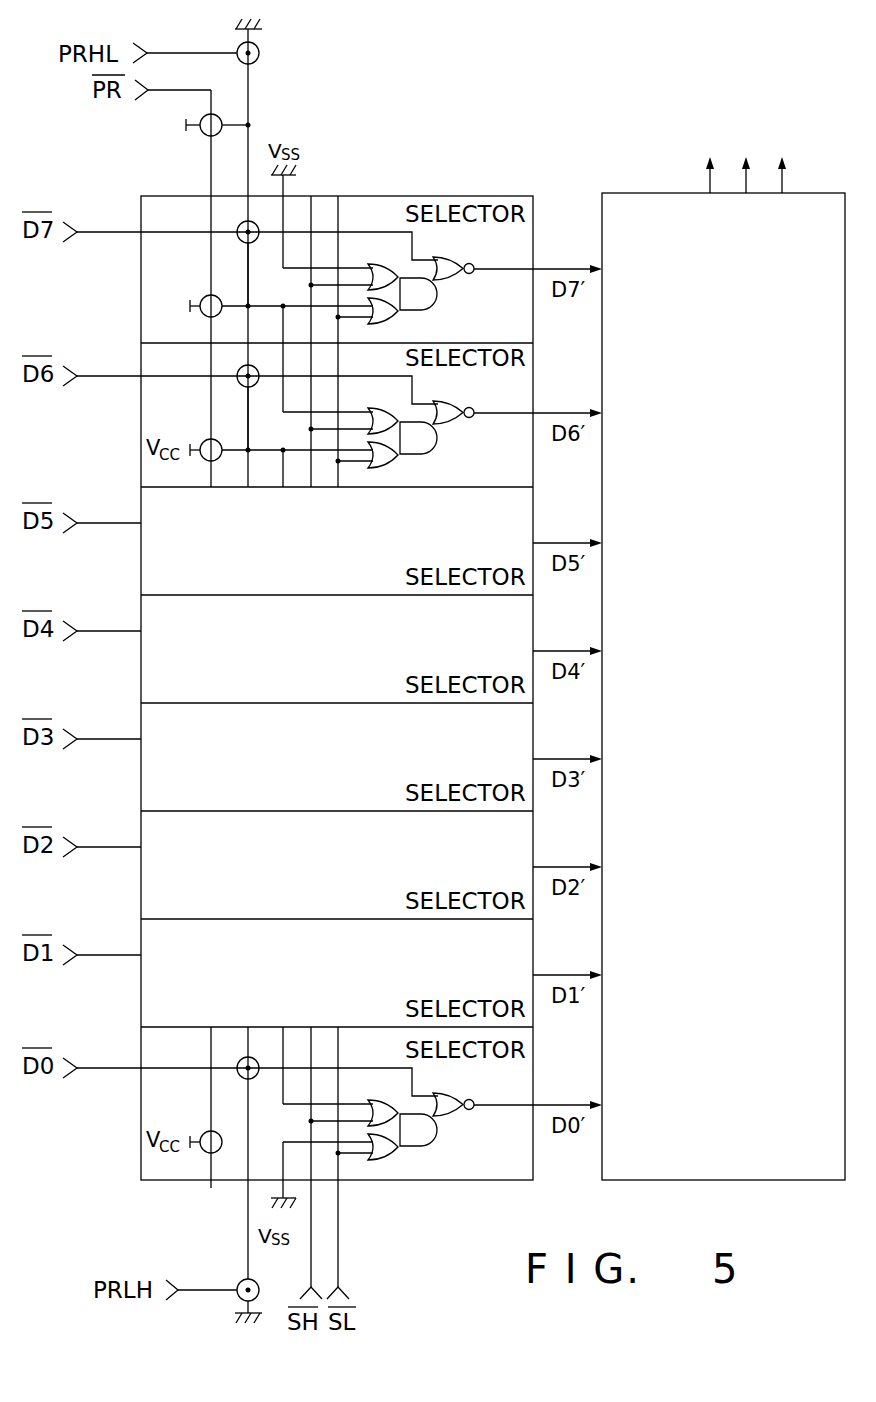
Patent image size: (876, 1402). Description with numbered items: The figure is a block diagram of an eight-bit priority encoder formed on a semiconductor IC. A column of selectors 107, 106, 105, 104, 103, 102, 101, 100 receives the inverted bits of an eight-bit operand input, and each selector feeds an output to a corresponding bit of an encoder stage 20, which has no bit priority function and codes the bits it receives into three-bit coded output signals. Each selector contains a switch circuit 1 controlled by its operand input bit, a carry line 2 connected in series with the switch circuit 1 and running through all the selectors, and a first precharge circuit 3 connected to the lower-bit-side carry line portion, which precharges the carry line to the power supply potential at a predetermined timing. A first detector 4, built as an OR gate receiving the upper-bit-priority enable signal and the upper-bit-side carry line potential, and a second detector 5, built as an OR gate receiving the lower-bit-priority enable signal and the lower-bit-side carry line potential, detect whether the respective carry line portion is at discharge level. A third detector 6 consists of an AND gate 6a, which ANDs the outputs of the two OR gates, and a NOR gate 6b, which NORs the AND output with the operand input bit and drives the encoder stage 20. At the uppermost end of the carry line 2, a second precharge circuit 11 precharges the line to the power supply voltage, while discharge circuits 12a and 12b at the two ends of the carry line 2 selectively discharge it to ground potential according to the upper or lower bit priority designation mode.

The switch circuit 1 is at (241, 243).
The carry line 2 is at (250, 287).
The first precharge circuit 3 is at (209, 294).
The first detector 4 is at (377, 266).
The second detector 5 is at (401, 323).
The third detector 6 is at (465, 299).
The AND gate 6a is at (437, 300).
The NOR gate 6b is at (452, 282).
The second precharge circuit 11 is at (204, 134).
The discharge circuit 12a is at (260, 56).
The discharge circuit 12b is at (237, 1280).
The encoder stage 20 is at (628, 165).
The selector 107 is at (533, 241).
The selector 106 is at (538, 387).
The selector 105 is at (533, 516).
The selector 104 is at (533, 624).
The selector 103 is at (533, 732).
The selector 102 is at (533, 840).
The selector 101 is at (533, 948).
The selector 100 is at (538, 1079).